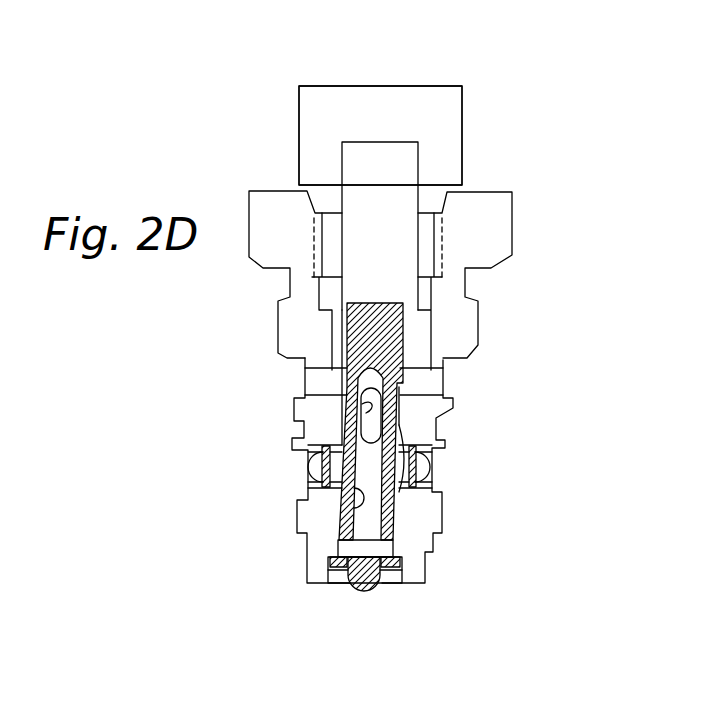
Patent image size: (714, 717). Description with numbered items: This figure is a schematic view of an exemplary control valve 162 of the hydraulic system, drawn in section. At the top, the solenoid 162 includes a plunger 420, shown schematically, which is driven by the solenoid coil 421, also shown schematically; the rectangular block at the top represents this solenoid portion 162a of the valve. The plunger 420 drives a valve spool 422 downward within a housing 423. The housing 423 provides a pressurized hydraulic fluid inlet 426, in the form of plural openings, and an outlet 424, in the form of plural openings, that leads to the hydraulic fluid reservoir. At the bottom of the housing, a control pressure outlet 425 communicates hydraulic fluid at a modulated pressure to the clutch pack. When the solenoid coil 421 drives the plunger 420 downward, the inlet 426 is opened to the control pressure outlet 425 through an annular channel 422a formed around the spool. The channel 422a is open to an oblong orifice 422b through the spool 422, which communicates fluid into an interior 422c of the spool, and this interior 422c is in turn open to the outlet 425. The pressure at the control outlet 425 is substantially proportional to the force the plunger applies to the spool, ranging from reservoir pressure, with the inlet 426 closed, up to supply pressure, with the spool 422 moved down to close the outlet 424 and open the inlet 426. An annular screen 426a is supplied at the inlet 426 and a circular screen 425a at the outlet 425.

The control valve 162 is at (436, 73).
The valve housing 162a is at (463, 108).
The solenoid coil 421 is at (463, 130).
The plunger 420 is at (402, 167).
The valve spool 422 is at (401, 334).
The outlet 424 is at (438, 380).
The housing 423 is at (430, 416).
The pressurized hydraulic fluid inlet 426 is at (436, 467).
The annular screen 426a is at (438, 445).
The annular channel 422a is at (442, 500).
The oblong orifice 422b is at (348, 418).
The interior of the spool 422c is at (340, 518).
The control pressure outlet 425 is at (388, 583).
The circular screen 425a is at (362, 593).